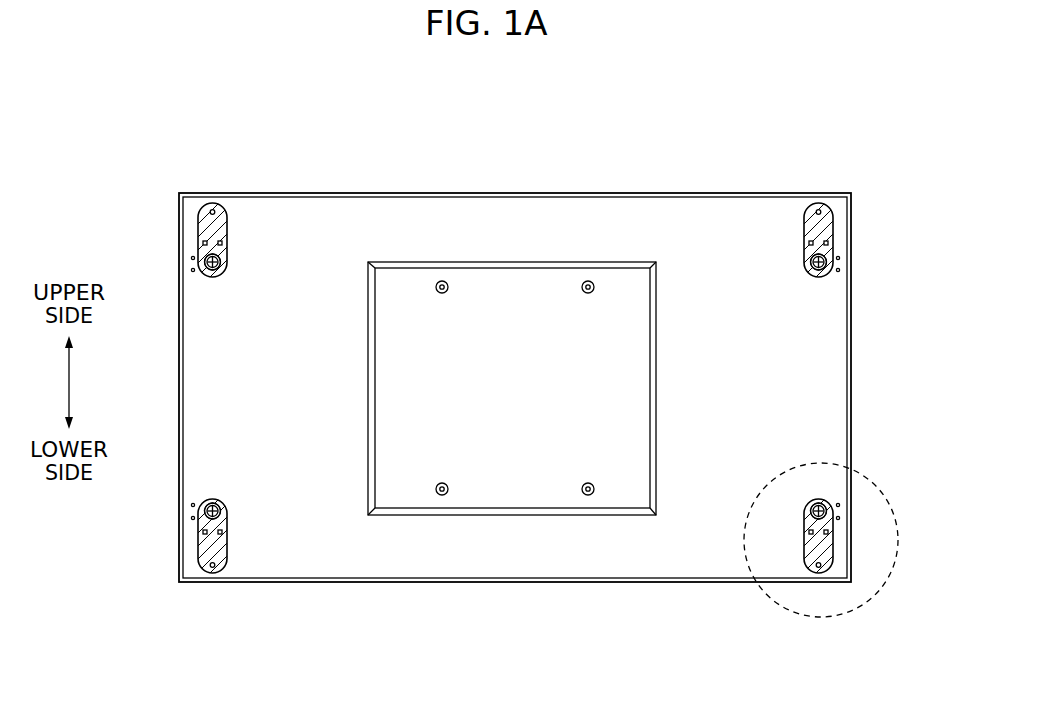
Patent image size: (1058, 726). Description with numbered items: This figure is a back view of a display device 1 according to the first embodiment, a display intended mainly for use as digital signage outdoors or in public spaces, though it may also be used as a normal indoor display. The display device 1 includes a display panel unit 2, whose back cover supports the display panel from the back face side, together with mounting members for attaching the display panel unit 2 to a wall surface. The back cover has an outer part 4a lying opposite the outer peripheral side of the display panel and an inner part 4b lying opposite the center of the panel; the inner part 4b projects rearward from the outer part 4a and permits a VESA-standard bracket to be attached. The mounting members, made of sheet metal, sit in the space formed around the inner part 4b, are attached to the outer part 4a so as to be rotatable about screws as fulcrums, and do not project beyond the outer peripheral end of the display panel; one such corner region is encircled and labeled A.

The display device 1 is at (850, 157).
The display panel unit 2 is at (522, 182).
The outer part 4a is at (318, 550).
The inner part 4b is at (520, 492).
The region A is at (856, 625).